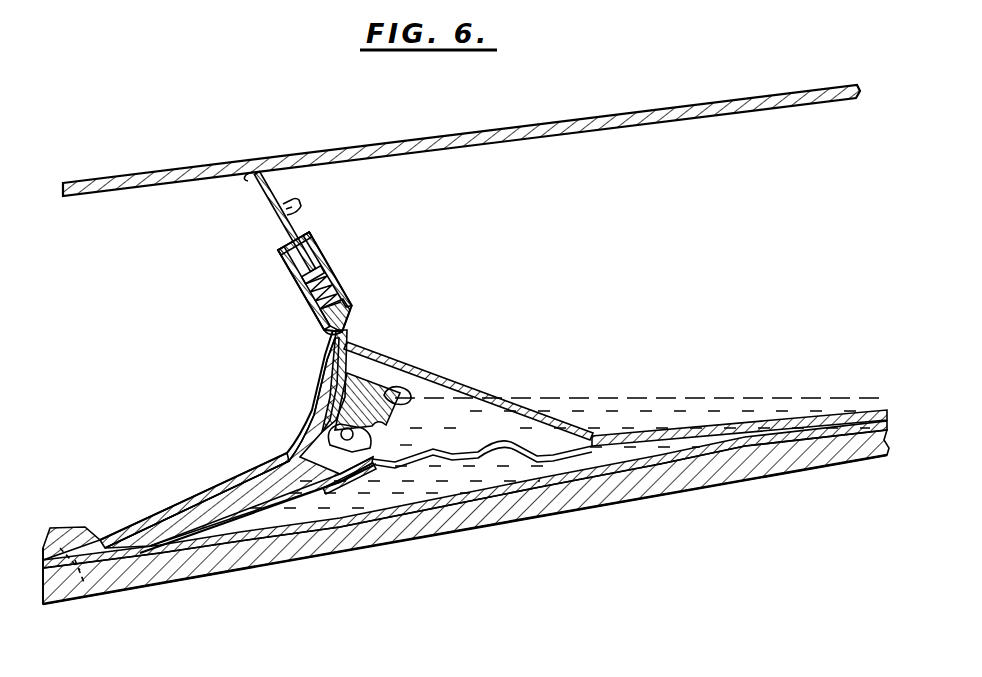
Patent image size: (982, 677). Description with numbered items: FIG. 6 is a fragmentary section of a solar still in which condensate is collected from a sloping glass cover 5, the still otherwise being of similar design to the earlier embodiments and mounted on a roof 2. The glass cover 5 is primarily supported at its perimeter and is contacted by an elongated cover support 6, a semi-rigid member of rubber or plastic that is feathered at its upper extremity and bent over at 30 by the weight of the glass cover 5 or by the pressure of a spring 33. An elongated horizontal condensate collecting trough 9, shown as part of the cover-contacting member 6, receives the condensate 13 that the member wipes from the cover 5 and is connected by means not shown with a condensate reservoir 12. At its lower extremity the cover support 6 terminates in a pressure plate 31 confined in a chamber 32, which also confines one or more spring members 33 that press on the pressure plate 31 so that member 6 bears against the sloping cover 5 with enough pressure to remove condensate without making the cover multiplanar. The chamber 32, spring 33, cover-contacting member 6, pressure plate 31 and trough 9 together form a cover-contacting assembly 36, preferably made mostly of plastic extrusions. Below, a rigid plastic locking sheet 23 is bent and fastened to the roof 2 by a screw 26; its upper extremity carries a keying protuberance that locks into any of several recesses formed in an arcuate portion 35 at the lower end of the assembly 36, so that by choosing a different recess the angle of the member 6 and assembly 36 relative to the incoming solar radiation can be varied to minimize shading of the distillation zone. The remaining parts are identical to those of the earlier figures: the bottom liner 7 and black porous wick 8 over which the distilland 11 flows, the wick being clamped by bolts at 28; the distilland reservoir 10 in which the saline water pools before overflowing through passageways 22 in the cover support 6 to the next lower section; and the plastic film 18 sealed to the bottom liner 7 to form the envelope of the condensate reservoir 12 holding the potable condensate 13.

The roof 2 is at (766, 462).
The glass cover 5 is at (632, 112).
The cover support 6 is at (273, 200).
The bottom liner 7 is at (844, 421).
The wick 8 is at (753, 430).
The condensate collecting trough 9 is at (302, 205).
The distilland reservoir 10 is at (585, 418).
The distilland 11 is at (660, 405).
The condensate reservoir 12 is at (467, 466).
The condensate 13 is at (370, 497).
The plastic film 18 is at (257, 537).
The passageways 22 is at (357, 392).
The locking sheet 23 is at (118, 553).
The screw 26 is at (60, 617).
The bolt clamping 28 is at (330, 357).
The bend 30 is at (250, 180).
The pressure plate 31 is at (312, 273).
The chamber 32 is at (342, 307).
The spring 33 is at (333, 288).
The arcuate portion 35 is at (392, 388).
The cover-contacting assembly 36 is at (322, 323).